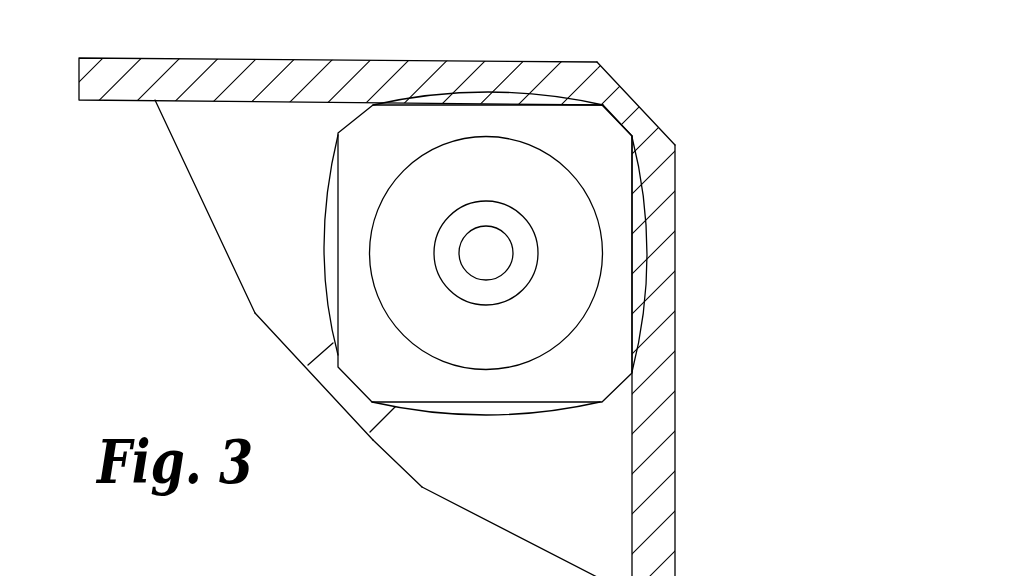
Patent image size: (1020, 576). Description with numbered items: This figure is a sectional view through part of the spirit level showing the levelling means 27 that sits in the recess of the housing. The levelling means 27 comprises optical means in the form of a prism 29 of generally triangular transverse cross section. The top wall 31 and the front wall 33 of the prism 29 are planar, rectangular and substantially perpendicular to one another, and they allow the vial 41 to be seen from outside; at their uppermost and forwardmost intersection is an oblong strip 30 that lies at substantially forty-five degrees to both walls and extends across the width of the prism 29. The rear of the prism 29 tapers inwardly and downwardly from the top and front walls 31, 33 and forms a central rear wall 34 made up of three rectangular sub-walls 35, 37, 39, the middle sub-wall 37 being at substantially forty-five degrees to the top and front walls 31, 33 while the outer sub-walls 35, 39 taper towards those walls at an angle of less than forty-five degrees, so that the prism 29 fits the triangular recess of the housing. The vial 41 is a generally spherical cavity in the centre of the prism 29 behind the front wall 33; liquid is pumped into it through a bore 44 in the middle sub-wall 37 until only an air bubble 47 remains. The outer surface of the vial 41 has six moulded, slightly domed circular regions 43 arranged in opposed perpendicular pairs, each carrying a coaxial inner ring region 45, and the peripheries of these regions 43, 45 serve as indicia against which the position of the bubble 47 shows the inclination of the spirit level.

The levelling means 27 is at (180, 279).
The prism 29 is at (544, 467).
The oblong strip 30 is at (635, 100).
The top wall 31 is at (258, 79).
The front wall 33 is at (652, 478).
The central rear wall 34 is at (300, 382).
The outer sub-wall 35 is at (483, 520).
The middle sub-wall 37 is at (383, 443).
The outer sub-wall 39 is at (205, 207).
The vial 41 is at (355, 120).
The flattened circular region 43 is at (502, 63).
The bore 44 is at (340, 385).
The inner ring region 45 is at (515, 212).
The air bubble 47 is at (485, 227).